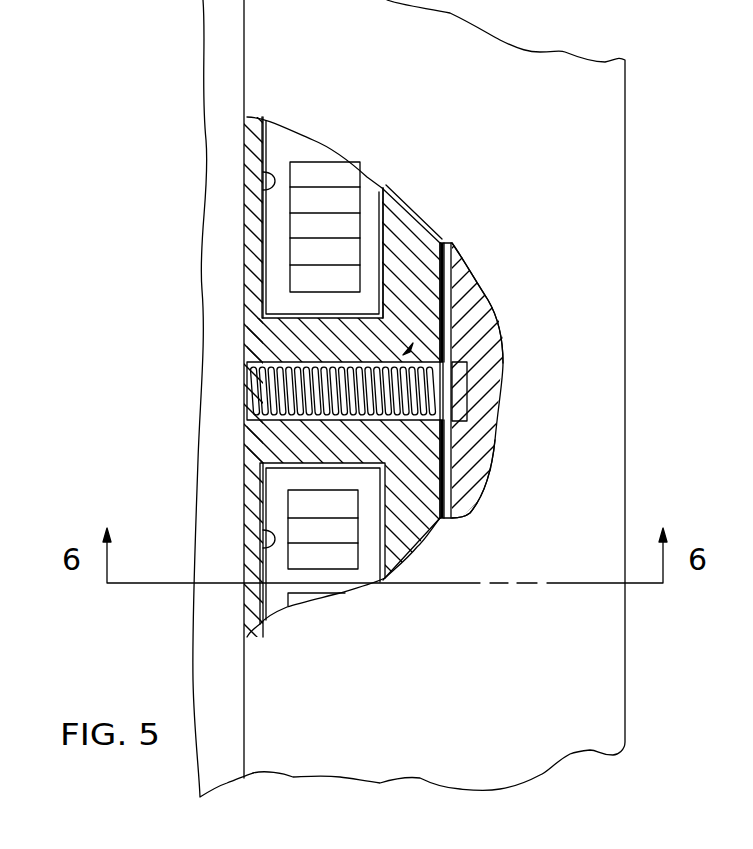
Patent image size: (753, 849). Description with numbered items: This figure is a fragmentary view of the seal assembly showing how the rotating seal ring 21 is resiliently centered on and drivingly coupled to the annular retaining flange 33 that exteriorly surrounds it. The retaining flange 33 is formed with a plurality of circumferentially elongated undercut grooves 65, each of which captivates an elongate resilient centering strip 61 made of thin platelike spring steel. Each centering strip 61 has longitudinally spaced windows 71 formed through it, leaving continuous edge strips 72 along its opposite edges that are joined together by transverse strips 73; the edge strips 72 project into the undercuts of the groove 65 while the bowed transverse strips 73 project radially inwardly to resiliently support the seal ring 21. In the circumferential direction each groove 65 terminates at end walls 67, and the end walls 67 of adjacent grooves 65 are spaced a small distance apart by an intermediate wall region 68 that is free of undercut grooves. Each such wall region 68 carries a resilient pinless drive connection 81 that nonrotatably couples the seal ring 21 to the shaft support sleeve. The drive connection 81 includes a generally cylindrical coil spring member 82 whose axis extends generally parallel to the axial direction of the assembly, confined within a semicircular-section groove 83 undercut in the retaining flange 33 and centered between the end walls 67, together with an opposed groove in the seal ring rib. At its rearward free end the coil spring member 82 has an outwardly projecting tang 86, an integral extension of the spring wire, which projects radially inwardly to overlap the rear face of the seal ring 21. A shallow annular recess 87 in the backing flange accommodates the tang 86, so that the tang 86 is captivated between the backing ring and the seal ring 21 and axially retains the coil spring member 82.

The seal ring 21 is at (195, 645).
The annular retaining flange 33 is at (442, 272).
The elongate resilient centering strip 61 is at (290, 256).
The groove 65 is at (258, 180).
The end wall 67 is at (273, 320).
The intermediate wall region 68 is at (280, 453).
The window 71 is at (320, 167).
The edge strip 72 is at (373, 243).
The transverse strip 73 is at (326, 196).
The resilient pinless drive connection 81 is at (442, 330).
The coil spring member 82 is at (450, 422).
The groove 83 is at (450, 390).
The tang 86 is at (443, 350).
The shallow annular recess 87 is at (448, 517).